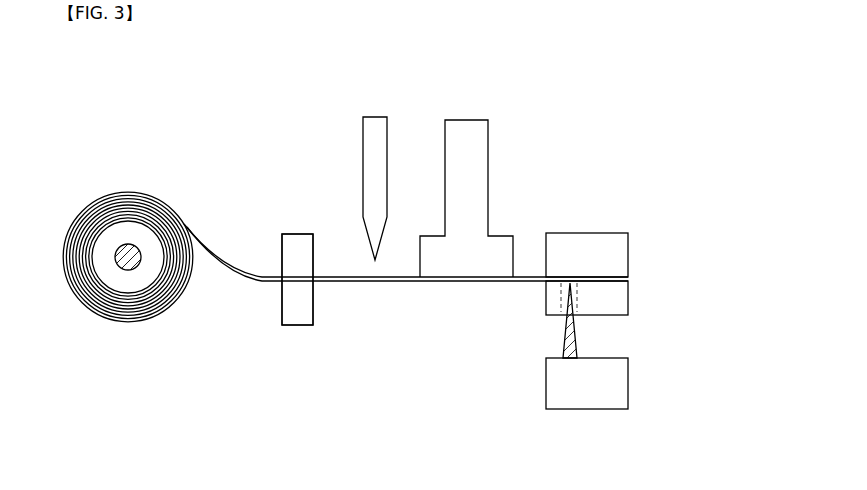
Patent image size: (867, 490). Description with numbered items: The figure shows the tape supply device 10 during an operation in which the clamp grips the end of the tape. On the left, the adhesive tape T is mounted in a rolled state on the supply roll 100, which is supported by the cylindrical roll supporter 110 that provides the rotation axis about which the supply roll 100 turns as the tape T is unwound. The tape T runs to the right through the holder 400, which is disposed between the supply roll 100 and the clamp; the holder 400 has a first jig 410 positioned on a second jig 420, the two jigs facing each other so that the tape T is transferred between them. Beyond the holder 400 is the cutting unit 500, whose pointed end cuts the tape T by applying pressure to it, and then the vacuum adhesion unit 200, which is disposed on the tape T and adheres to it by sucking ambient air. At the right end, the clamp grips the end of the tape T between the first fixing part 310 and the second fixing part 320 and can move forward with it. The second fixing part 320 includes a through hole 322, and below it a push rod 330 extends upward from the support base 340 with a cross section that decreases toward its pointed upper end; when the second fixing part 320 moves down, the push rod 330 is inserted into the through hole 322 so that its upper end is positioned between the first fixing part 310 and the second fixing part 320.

The tape supply device 10 is at (63, 96).
The supply roll 100 is at (133, 280).
The roll supporter 110 is at (127, 247).
The adhesive tape T is at (230, 282).
The holder 400 is at (318, 341).
The first jig 410 is at (305, 258).
The second jig 420 is at (297, 318).
The cutting unit 500 is at (376, 135).
The vacuum adhesion unit 200 is at (460, 140).
The first fixing part 310 is at (645, 252).
The second fixing part 320 is at (645, 298).
The through hole 322 is at (566, 287).
The push rod 330 is at (577, 345).
The support base 340 is at (645, 400).